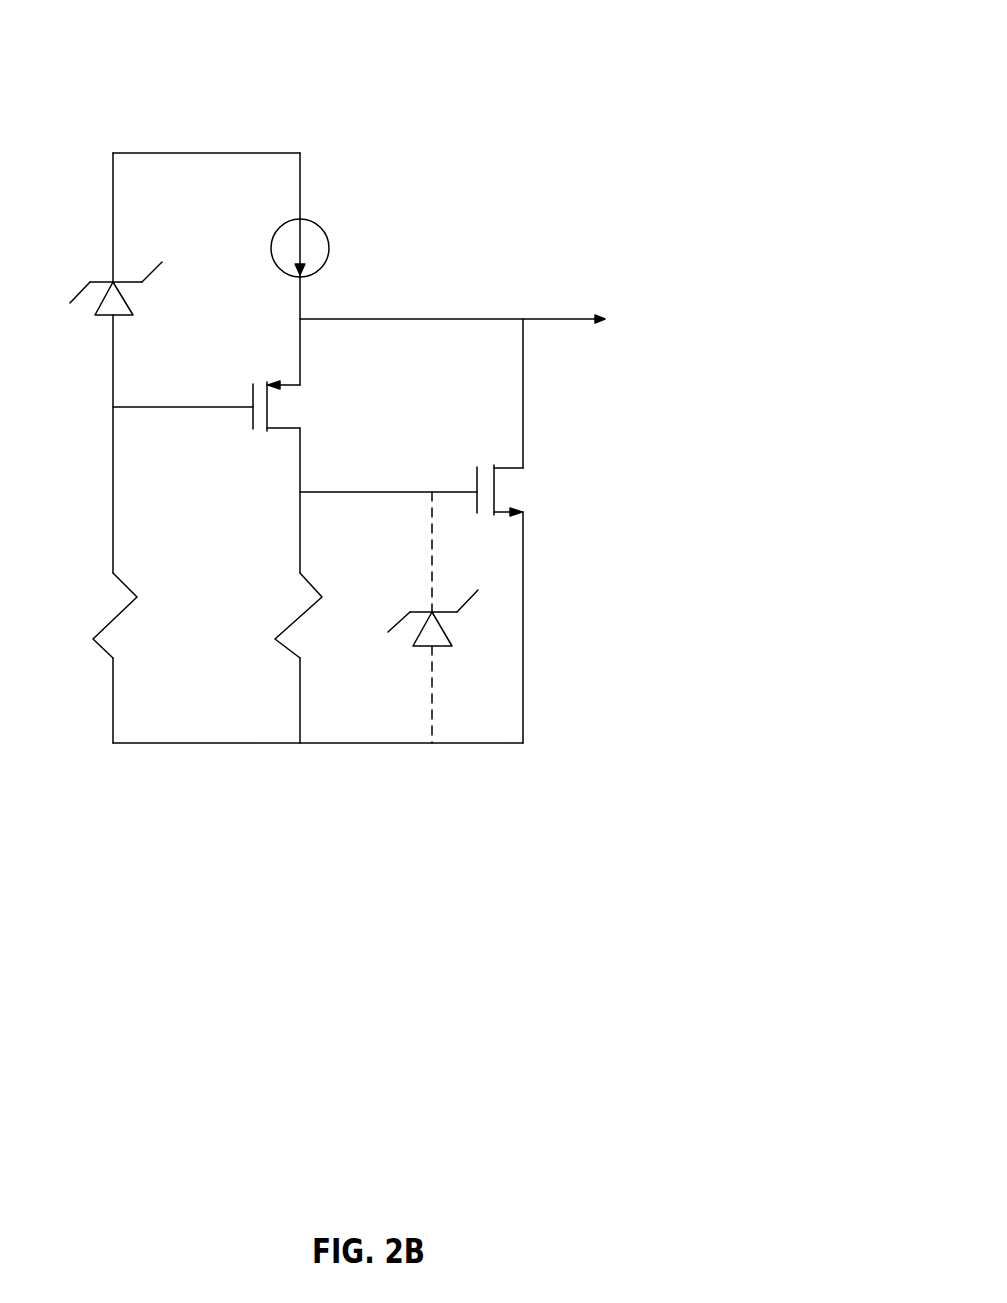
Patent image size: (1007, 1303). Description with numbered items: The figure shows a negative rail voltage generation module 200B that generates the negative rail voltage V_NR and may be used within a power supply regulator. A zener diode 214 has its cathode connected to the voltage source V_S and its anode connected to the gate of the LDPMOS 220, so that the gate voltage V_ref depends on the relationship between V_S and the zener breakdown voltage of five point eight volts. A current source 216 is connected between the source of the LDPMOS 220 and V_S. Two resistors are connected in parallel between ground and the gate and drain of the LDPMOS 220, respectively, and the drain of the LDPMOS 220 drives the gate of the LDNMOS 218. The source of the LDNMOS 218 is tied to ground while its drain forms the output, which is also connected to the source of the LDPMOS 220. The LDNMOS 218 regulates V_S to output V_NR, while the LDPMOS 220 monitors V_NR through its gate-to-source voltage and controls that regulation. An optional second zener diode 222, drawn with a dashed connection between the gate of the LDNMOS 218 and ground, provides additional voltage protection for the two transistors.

The negative rail voltage generation module 200B is at (732, 41).
The zener diode 214 is at (92, 291).
The current source 216 is at (304, 248).
The LDNMOS 218 is at (535, 480).
The LDPMOS 220 is at (322, 411).
The second zener diode 222 is at (410, 617).